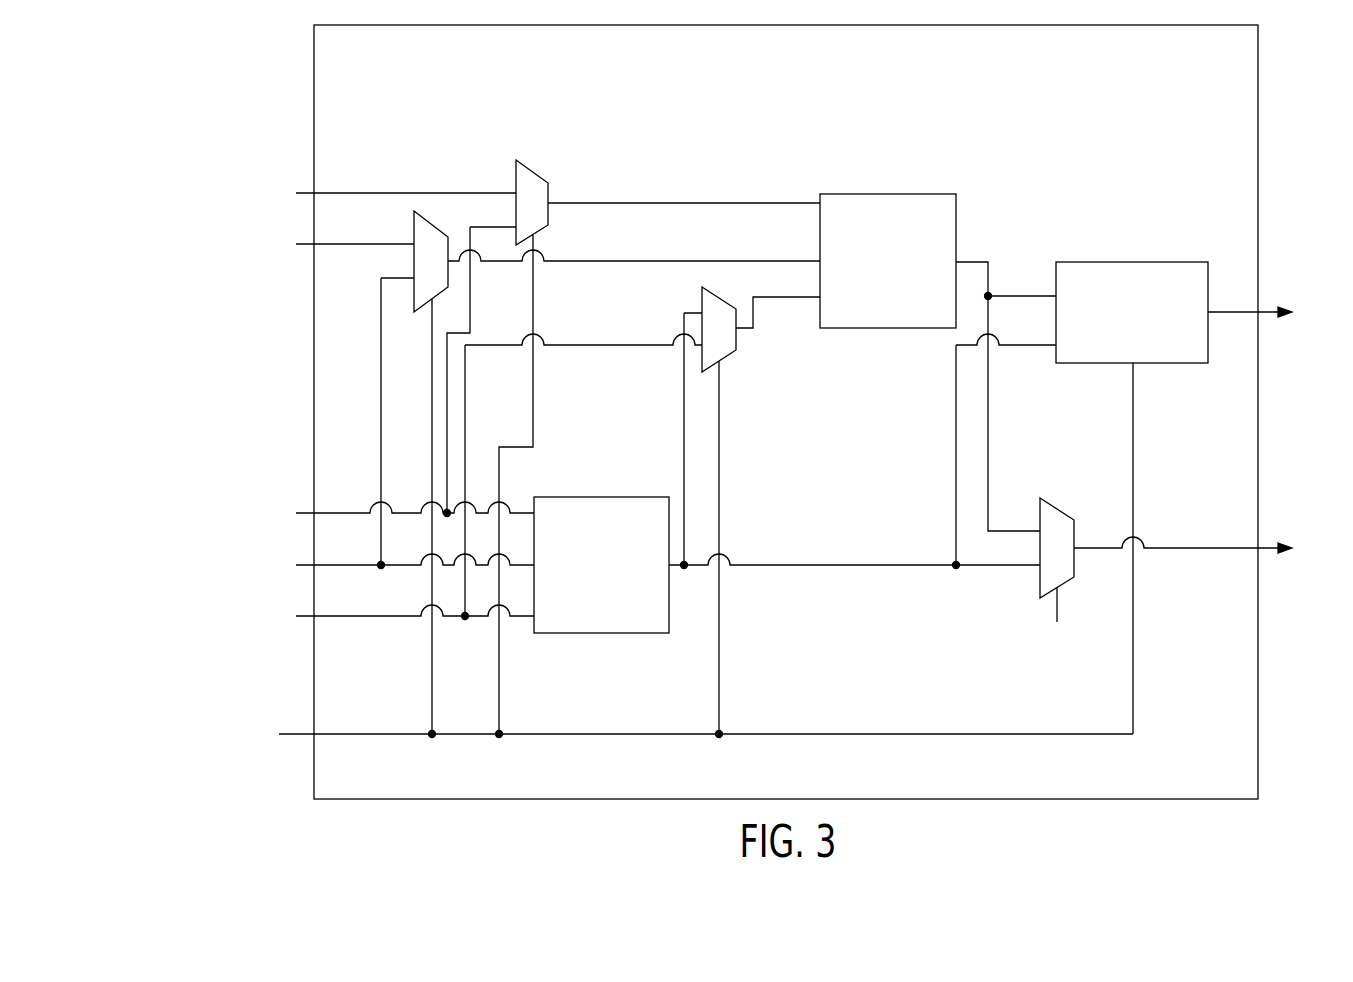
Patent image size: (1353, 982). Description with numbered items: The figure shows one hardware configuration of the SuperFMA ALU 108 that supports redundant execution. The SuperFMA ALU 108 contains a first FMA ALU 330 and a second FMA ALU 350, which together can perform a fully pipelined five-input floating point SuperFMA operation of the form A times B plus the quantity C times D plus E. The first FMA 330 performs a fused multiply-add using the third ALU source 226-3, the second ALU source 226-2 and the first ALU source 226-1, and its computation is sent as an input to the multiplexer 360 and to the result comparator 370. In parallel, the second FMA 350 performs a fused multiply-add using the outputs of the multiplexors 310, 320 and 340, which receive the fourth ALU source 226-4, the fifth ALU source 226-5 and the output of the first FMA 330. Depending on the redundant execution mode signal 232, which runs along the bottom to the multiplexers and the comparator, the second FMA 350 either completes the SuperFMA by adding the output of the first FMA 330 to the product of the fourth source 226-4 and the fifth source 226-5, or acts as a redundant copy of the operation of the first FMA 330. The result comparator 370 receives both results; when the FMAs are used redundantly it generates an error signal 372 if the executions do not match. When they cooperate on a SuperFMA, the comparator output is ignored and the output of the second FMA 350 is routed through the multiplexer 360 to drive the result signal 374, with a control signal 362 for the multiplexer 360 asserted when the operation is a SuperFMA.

The SuperFMA ALU 108 is at (520, 70).
The ALU Source 1 226-1 is at (385, 617).
The ALU Source 2 226-2 is at (330, 564).
The ALU Source 3 226-3 is at (330, 512).
The ALU Source 4 226-4 is at (343, 246).
The ALU Source 5 226-5 is at (433, 192).
The redundant execution mode signal 232 is at (398, 735).
The multiplexor 310 is at (416, 272).
The multiplexor 320 is at (517, 213).
The first FMA ALU 330 is at (584, 589).
The multiplexor 340 is at (704, 339).
The second FMA ALU 350 is at (871, 287).
The multiplexer 360 is at (1042, 557).
The control signal 362 is at (1048, 624).
The result comparator 370 is at (1116, 351).
The error signal 372 is at (1270, 310).
The result signal 374 is at (1270, 546).